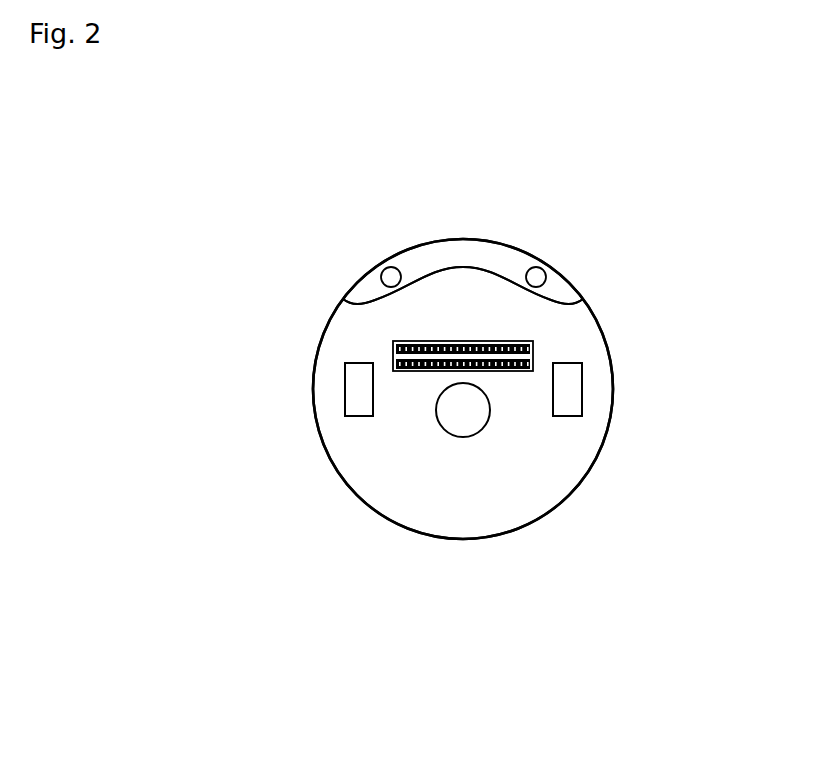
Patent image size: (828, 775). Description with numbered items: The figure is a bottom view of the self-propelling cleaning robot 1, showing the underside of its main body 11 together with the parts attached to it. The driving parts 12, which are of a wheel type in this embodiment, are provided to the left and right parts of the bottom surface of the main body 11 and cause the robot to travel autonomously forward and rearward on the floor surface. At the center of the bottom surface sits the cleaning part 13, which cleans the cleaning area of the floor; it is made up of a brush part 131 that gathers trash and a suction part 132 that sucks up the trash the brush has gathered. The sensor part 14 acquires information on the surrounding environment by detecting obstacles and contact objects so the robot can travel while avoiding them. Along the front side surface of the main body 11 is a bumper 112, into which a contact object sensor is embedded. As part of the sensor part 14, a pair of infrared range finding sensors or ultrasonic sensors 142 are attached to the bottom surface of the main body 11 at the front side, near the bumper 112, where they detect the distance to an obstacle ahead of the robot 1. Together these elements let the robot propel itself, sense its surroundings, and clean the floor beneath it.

The self-propelling cleaning robot 1 is at (541, 204).
The main body 11 is at (586, 445).
The bumper 112 is at (430, 257).
The driving parts 12 is at (356, 388).
The cleaning part 13 is at (435, 501).
The brush part 131 is at (437, 368).
The suction part 132 is at (457, 417).
The sensor part 14 is at (463, 285).
The ultrasonic sensor 142 is at (388, 278).